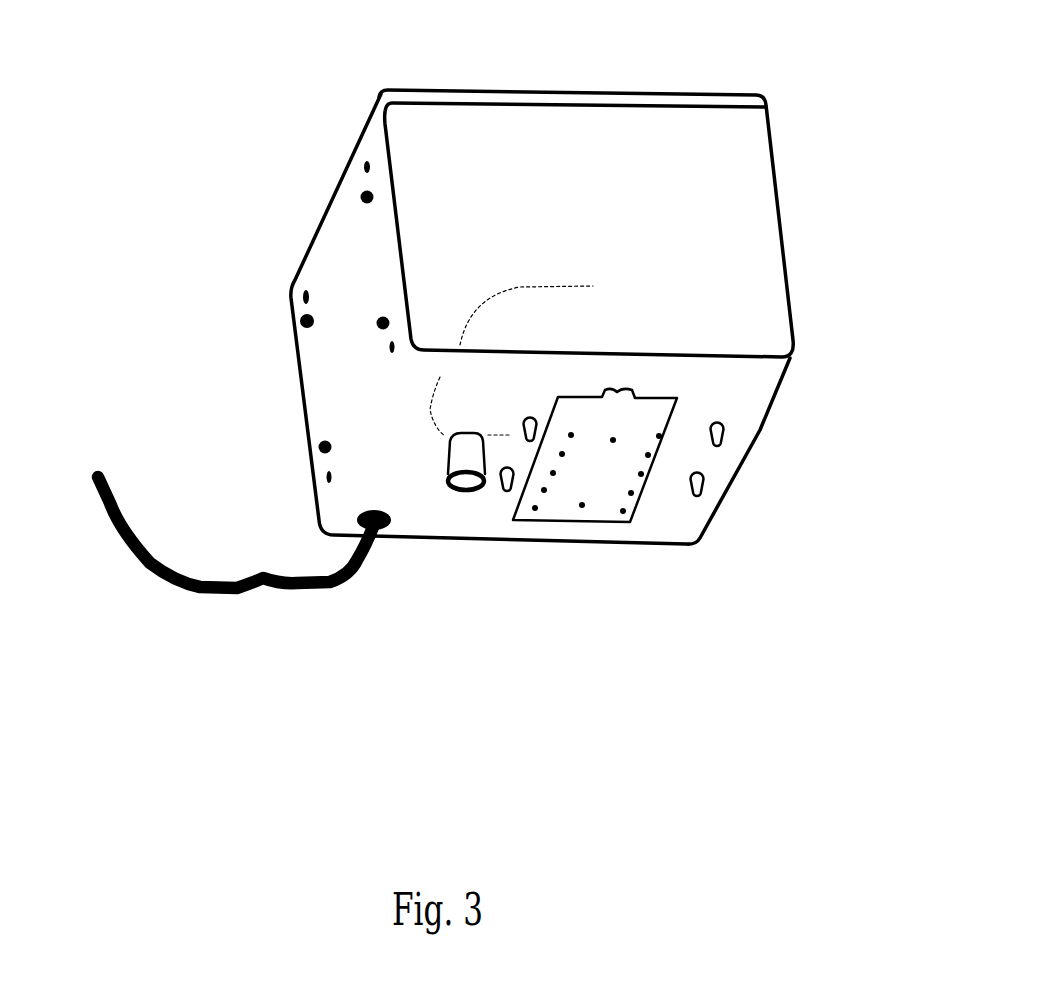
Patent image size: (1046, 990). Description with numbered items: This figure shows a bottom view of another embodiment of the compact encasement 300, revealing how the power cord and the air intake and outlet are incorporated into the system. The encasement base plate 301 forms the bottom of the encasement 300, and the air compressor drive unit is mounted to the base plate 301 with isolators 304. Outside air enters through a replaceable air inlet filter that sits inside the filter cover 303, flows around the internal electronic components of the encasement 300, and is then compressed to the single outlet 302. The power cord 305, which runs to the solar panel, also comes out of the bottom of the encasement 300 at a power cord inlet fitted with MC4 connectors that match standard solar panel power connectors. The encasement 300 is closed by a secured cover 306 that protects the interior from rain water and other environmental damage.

The encasement 300 is at (652, 56).
The encasement base plate 301 is at (331, 283).
The single outlet 302 is at (446, 462).
The filter cover 303 is at (628, 480).
The isolators 304 is at (727, 432).
The power cord 305 is at (97, 495).
The secured cover 306 is at (447, 90).